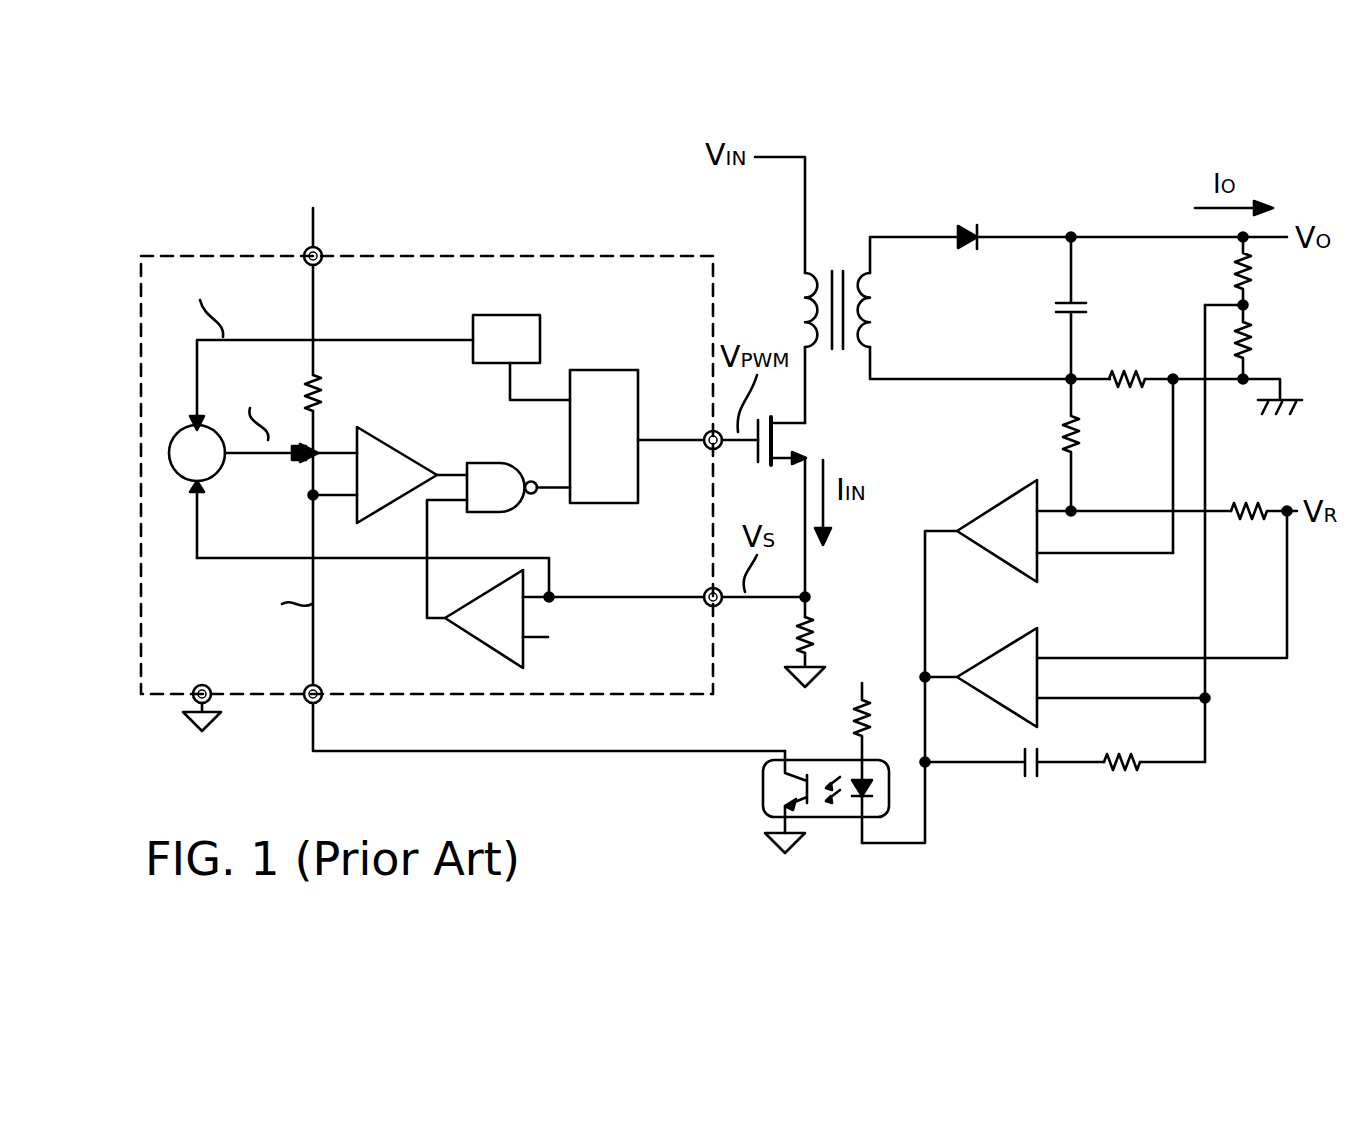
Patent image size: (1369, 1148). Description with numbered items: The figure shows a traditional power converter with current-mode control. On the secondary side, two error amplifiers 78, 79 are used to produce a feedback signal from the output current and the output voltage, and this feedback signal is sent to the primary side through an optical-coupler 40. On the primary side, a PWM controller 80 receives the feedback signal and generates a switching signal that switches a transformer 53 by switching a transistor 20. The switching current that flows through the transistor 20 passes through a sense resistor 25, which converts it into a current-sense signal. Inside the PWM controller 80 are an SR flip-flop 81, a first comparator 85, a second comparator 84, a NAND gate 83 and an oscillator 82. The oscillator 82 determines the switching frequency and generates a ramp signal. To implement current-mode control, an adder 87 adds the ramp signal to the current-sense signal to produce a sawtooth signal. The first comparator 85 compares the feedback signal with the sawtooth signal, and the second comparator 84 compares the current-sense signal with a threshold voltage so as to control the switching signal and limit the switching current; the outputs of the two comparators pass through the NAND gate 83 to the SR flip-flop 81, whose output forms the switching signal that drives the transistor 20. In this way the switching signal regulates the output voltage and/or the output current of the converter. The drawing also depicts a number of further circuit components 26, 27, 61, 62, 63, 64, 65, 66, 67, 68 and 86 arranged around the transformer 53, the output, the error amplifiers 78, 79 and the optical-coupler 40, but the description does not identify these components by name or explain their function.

The transistor 20 is at (808, 440).
The sense resistor 25 is at (820, 633).
The output rectifier diode 26 is at (964, 222).
The output capacitor 27 is at (1055, 306).
The optical-coupler 40 is at (755, 793).
The transformer 53 is at (838, 253).
The voltage divider resistor 61 is at (1256, 272).
The voltage divider resistor 62 is at (1256, 340).
The current sense resistor 63 is at (1126, 360).
The resistor 64 is at (1056, 437).
The reference resistor 65 is at (1245, 528).
The compensation resistor 66 is at (1120, 780).
The compensation capacitor 67 is at (1030, 780).
The optocoupler series resistor 68 is at (848, 721).
The error amplifier 78 is at (978, 512).
The error amplifier 79 is at (992, 648).
The PWM controller 80 is at (517, 255).
The SR flip-flop 81 is at (640, 507).
The oscillator 82 is at (545, 320).
The NAND gate 83 is at (486, 461).
The second comparator 84 is at (462, 646).
The first comparator 85 is at (382, 527).
The pull-up resistor 86 is at (325, 397).
The adder 87 is at (168, 462).